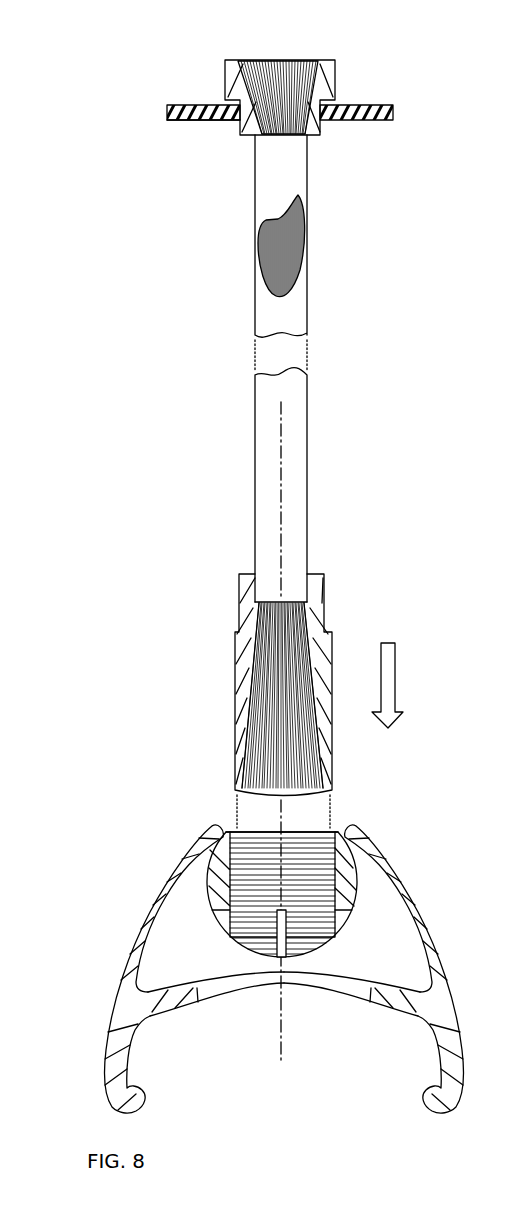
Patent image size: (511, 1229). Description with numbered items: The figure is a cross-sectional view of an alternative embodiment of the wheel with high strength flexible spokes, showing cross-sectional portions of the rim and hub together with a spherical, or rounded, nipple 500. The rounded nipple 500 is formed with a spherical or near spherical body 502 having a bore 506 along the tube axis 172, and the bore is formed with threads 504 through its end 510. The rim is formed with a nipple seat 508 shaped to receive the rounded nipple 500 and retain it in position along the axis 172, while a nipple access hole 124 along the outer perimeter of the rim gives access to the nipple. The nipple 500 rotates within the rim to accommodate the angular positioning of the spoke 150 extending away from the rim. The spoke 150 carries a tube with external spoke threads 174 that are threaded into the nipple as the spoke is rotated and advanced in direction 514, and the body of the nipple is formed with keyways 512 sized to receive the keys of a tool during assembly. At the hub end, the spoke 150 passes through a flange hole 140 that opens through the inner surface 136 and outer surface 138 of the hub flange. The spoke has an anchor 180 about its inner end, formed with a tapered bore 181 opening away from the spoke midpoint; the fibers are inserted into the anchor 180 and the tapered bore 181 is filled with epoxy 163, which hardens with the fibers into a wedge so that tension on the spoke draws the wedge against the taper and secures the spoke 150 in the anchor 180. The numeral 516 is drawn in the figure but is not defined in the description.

The nipple access hole 124 is at (376, 993).
The inner surface 136 is at (178, 105).
The outer surface 138 is at (200, 121).
The flange hole 140 is at (240, 121).
The spoke 150 is at (191, 277).
The epoxy 163 is at (290, 60).
The tube axis 172 is at (282, 1022).
The external spoke threads 174 is at (247, 652).
The anchor 180 is at (325, 98).
The tapered bore 181 is at (245, 88).
The rounded nipple 500 is at (366, 826).
The spherical body 502 is at (327, 947).
The threads 504 is at (317, 905).
The bore 506 is at (252, 832).
The nipple seat 508 is at (224, 852).
The end 510 is at (250, 955).
The keyway 512 is at (280, 927).
The direction 514 is at (388, 682).
The hub feature 516 is at (499, 918).